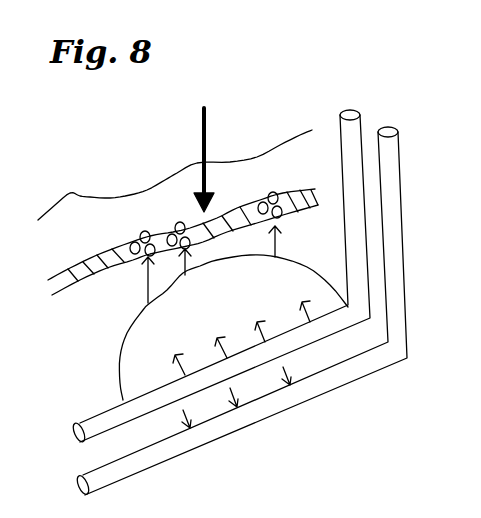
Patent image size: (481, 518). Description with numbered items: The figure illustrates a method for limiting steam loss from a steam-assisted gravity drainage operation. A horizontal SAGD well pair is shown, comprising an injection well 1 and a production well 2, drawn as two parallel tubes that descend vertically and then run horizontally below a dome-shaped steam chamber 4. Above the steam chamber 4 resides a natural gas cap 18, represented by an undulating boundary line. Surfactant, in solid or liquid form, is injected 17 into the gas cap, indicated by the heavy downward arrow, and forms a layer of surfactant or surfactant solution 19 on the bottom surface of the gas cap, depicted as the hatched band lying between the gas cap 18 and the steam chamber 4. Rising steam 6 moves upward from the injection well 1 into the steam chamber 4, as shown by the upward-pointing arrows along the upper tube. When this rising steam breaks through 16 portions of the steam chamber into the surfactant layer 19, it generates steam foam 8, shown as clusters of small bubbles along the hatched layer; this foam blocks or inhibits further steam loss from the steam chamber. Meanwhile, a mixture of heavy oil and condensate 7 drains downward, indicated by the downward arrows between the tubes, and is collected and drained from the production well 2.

The injection well 1 is at (339, 125).
The production well 2 is at (401, 160).
The steam chamber 4 is at (121, 352).
The rising steam 6 is at (241, 338).
The mixture of heavy oil and condensate 7 is at (248, 391).
The steam foam 8 is at (202, 224).
The steam breakthrough 16 is at (202, 264).
The surfactant injection 17 is at (206, 146).
The natural gas cap 18 is at (90, 197).
The layer of surfactant or surfactant solution 19 is at (72, 268).